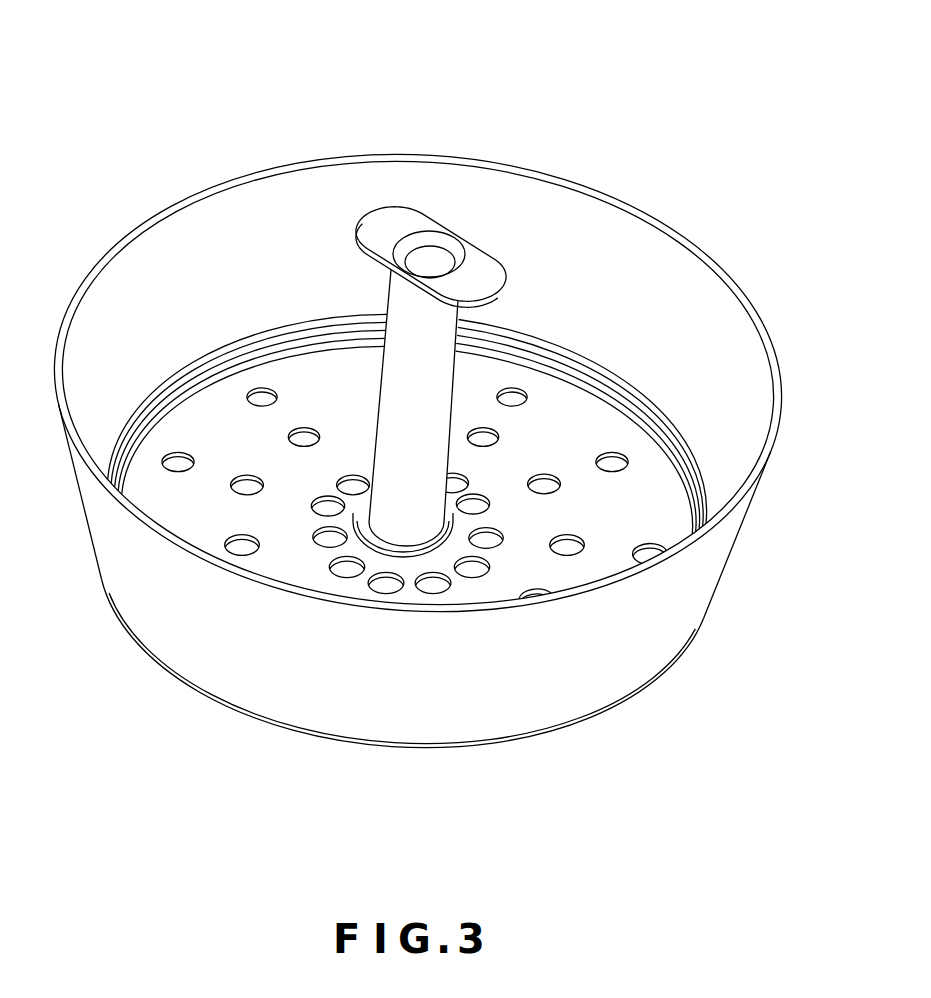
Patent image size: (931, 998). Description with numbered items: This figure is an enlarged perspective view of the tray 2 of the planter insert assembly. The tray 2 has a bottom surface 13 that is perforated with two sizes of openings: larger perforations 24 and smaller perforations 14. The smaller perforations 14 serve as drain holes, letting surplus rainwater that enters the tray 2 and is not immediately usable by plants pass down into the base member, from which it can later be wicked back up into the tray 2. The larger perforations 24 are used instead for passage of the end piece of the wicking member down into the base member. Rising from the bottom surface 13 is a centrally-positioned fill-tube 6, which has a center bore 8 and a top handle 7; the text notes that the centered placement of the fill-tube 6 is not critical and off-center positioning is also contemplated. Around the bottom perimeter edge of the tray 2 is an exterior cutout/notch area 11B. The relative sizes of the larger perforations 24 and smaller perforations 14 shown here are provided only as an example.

The tray 2 is at (130, 108).
The fill-tube 6 is at (398, 420).
The top handle 7 is at (483, 268).
The center bore 8 is at (436, 256).
The exterior cutout/notch area 11B is at (233, 700).
The bottom surface 13 is at (492, 588).
The smaller perforations 14 is at (493, 542).
The larger perforations 24 is at (326, 540).